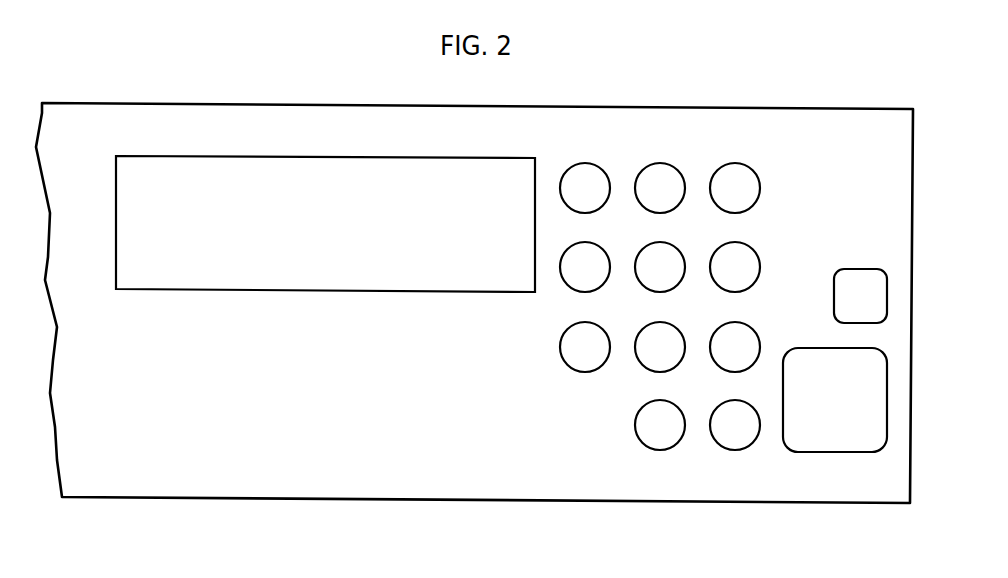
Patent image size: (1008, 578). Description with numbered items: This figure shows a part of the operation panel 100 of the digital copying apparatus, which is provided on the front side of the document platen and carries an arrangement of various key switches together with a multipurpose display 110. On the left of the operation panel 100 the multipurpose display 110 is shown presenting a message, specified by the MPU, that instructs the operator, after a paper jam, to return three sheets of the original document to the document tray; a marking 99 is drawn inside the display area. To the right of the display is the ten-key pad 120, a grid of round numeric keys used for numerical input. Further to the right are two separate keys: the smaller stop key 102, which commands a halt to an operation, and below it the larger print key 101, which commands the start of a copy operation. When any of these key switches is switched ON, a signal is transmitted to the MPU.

The operation panel 100 is at (828, 106).
The multipurpose display 110 is at (187, 292).
The message 99 is at (321, 211).
The ten-key pad 120 is at (698, 171).
The stop key 102 is at (847, 269).
The print key 101 is at (800, 449).